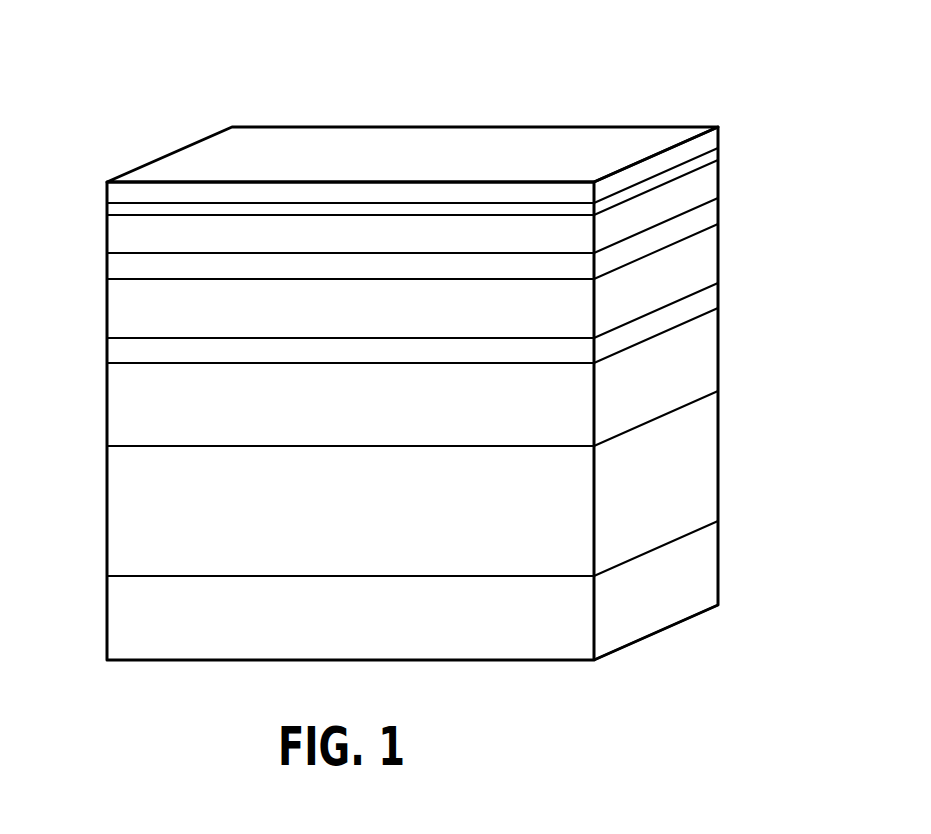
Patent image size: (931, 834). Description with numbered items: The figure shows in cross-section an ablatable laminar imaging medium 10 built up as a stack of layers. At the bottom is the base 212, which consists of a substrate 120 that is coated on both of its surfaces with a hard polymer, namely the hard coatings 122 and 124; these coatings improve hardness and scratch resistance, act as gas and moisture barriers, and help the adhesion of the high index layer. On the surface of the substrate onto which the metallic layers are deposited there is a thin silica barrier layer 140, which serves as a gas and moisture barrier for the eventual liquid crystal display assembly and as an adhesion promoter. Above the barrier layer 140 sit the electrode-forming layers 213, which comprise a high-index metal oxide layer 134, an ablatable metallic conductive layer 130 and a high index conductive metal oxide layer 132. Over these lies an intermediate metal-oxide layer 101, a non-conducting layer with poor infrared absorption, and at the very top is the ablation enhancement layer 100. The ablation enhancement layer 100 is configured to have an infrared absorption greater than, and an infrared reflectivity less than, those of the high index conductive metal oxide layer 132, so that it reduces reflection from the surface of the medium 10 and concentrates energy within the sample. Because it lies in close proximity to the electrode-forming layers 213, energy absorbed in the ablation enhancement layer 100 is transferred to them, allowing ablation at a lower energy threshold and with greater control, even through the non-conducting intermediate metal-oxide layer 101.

The ablatable laminar imaging medium 10 is at (728, 68).
The ablation enhancement layer 100 is at (705, 143).
The intermediate metal-oxide layer 101 is at (720, 153).
The high index conductive metal oxide layer 132 is at (703, 184).
The ablatable metallic conductive layer 130 is at (708, 215).
The high-index metal oxide layer 134 is at (707, 263).
The barrier layer 140 is at (707, 300).
The hard coating 122 is at (705, 353).
The substrate 120 is at (702, 457).
The hard coating 124 is at (703, 567).
The electrode-forming layers 213 is at (98, 340).
The base 212 is at (98, 368).